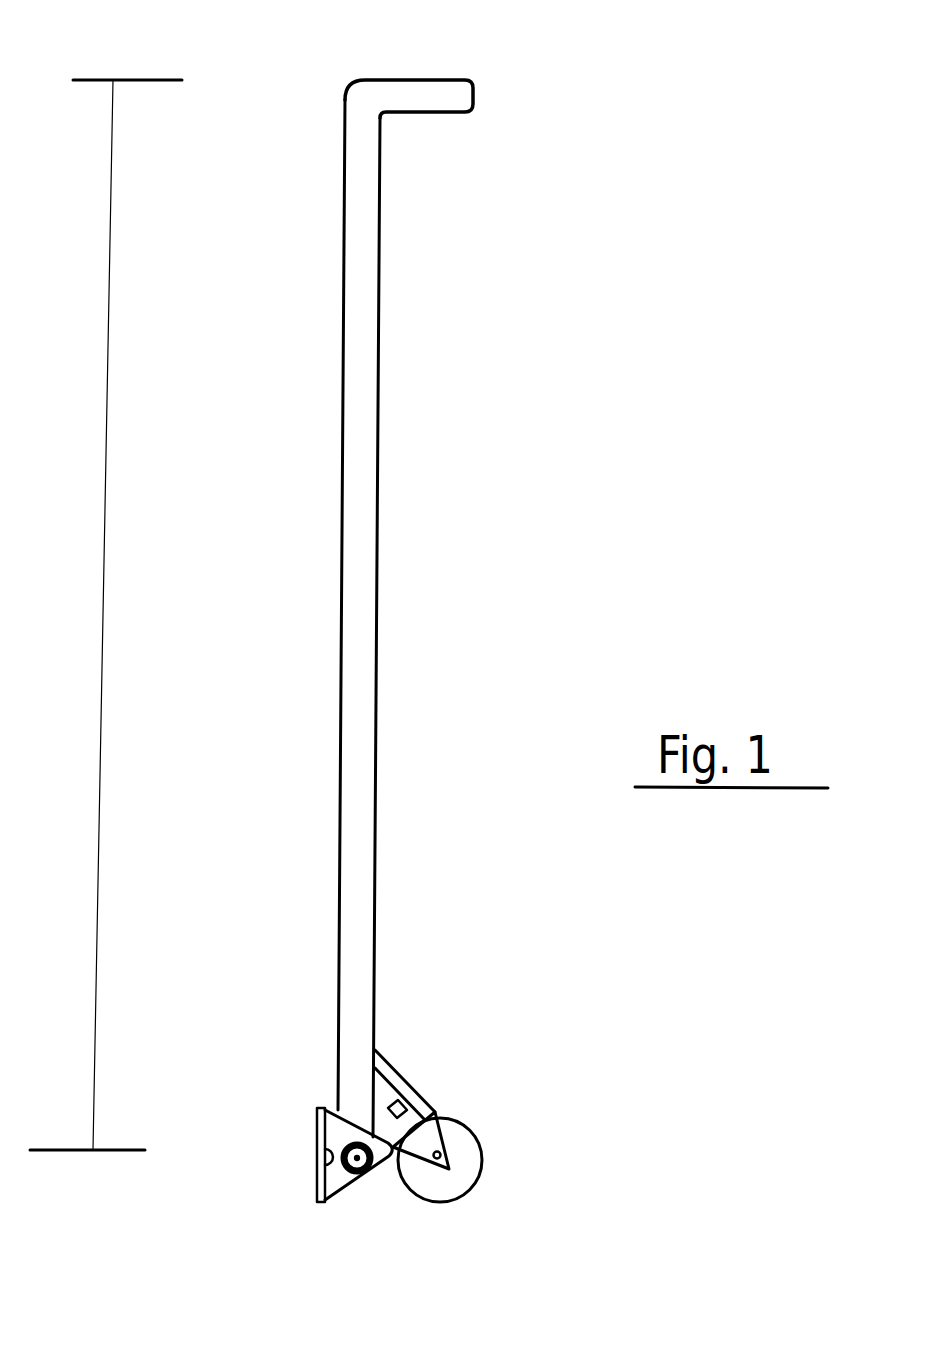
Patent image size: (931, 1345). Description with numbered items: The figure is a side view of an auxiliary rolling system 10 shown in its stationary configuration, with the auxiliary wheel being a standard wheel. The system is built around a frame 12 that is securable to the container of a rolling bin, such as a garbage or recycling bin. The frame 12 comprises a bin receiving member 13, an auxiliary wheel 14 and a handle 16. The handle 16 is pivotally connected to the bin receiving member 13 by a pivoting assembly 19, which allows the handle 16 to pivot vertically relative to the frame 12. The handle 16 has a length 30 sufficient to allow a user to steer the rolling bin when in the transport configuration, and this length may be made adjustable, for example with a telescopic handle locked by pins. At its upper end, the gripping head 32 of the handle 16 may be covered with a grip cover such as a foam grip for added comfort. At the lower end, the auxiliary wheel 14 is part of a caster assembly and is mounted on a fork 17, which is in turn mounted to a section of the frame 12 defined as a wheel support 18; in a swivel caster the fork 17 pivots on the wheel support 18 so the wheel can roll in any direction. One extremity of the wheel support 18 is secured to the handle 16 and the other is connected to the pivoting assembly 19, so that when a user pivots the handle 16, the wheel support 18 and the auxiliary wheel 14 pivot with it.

The auxiliary rolling system 10 is at (625, 310).
The frame 12 is at (338, 1130).
The bin receiving member 13 is at (318, 1157).
The auxiliary wheel 14 is at (455, 1180).
The handle 16 is at (360, 628).
The fork 17 is at (425, 1143).
The wheel support 18 is at (397, 1082).
The pivoting assembly 19 is at (358, 1162).
The length 30 is at (106, 615).
The gripping head 32 is at (440, 93).